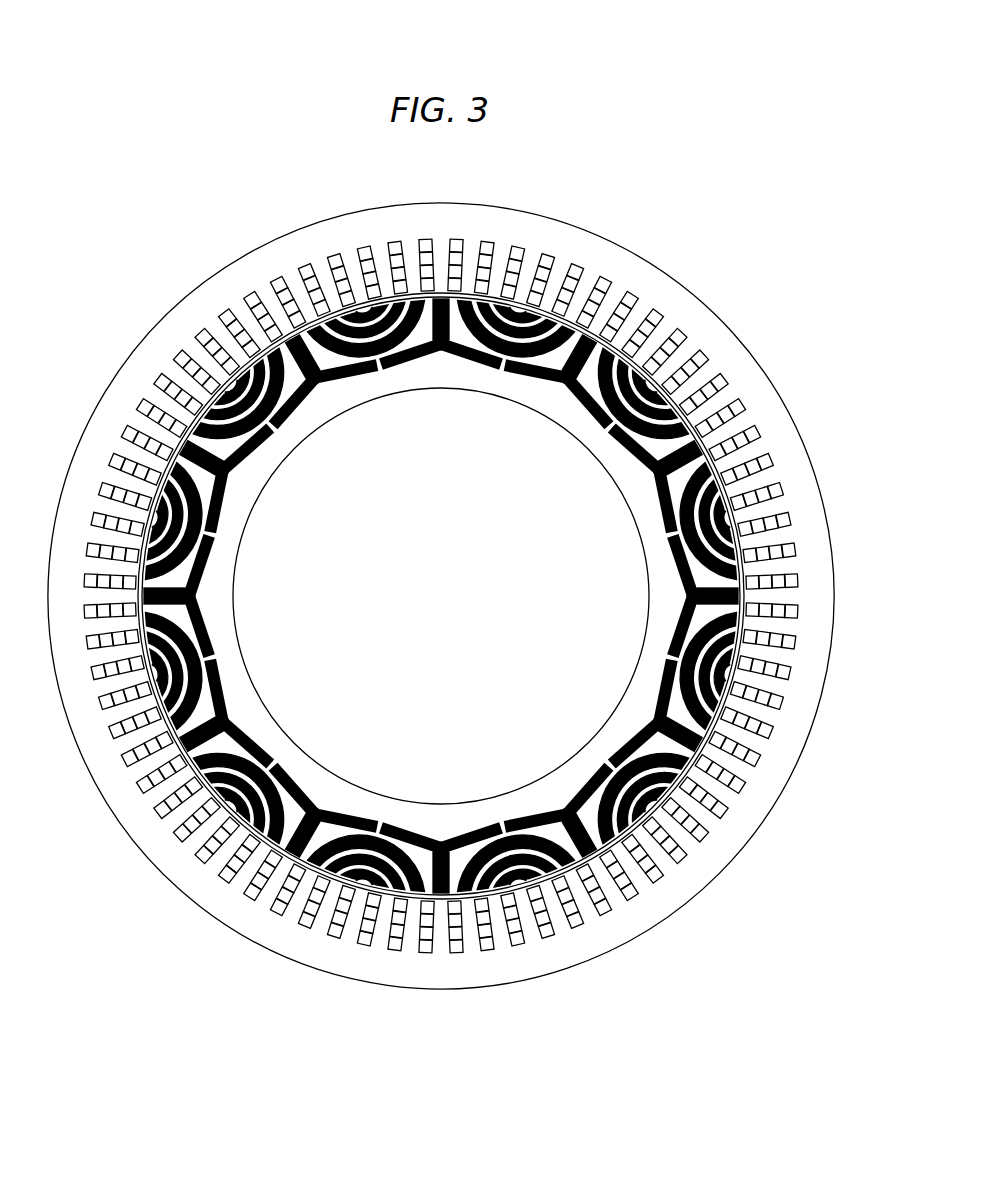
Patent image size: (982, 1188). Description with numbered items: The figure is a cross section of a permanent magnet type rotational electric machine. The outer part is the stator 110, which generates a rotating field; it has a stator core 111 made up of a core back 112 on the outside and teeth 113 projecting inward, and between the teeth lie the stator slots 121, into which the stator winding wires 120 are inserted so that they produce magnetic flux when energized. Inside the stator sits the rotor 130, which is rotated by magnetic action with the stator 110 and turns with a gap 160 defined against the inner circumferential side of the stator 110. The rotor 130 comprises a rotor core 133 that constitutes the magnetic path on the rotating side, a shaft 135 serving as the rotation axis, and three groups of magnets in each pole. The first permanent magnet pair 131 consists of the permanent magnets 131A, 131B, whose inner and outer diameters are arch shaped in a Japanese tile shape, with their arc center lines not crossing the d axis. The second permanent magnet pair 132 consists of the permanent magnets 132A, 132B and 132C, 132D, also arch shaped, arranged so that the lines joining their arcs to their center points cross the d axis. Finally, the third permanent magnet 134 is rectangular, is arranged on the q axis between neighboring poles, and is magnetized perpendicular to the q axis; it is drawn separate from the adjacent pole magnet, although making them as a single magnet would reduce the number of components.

The stator 110 is at (470, 576).
The stator core 111 is at (590, 262).
The core back 112 is at (648, 285).
The teeth 113 is at (690, 322).
The stator winding wires 120 is at (488, 585).
The stator slots 121 is at (300, 330).
The rotor 130 is at (440, 595).
The first permanent magnet pair 131 is at (441, 596).
The permanent magnet 131A is at (288, 777).
The permanent magnet 131B is at (260, 750).
The second permanent magnet pair 132 is at (440, 595).
The permanent magnet 132A is at (180, 508).
The permanent magnet 132B is at (192, 520).
The permanent magnet 132C is at (185, 556).
The permanent magnet 132D is at (190, 582).
The rotor core 133 is at (637, 682).
The third permanent magnet 134 is at (314, 380).
The shaft 135 is at (441, 596).
The gap 160 is at (745, 492).